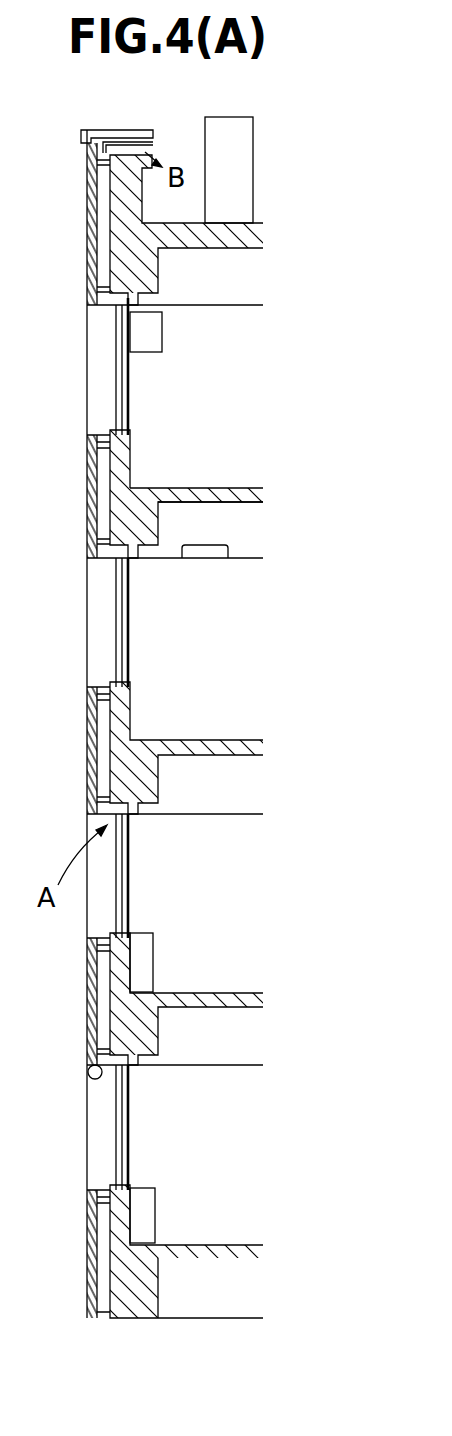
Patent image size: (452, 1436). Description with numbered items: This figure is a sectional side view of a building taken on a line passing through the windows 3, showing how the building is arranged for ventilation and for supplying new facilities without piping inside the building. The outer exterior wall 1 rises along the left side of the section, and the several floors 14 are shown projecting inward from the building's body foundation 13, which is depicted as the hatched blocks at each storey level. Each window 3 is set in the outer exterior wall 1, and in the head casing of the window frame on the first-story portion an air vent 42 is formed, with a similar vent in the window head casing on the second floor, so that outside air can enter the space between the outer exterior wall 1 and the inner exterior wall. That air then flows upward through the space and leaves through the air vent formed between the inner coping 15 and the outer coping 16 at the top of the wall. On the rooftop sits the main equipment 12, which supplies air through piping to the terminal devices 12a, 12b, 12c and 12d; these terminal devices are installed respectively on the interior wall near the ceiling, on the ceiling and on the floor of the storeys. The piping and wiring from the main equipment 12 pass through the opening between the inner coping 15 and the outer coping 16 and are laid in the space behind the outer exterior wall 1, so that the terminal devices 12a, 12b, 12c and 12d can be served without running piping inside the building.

The outer exterior wall 1 is at (92, 1230).
The window 3 is at (107, 1099).
The main equipment 12 is at (257, 157).
The terminal device 12a is at (153, 340).
The terminal device 12b is at (207, 553).
The terminal device 12c is at (148, 950).
The terminal device 12d is at (153, 1205).
The building's body foundation 13 is at (132, 1307).
The floor 14 is at (210, 484).
The inner coping 15 is at (134, 156).
The outer coping 16 is at (107, 130).
The air vent 42 is at (86, 1063).